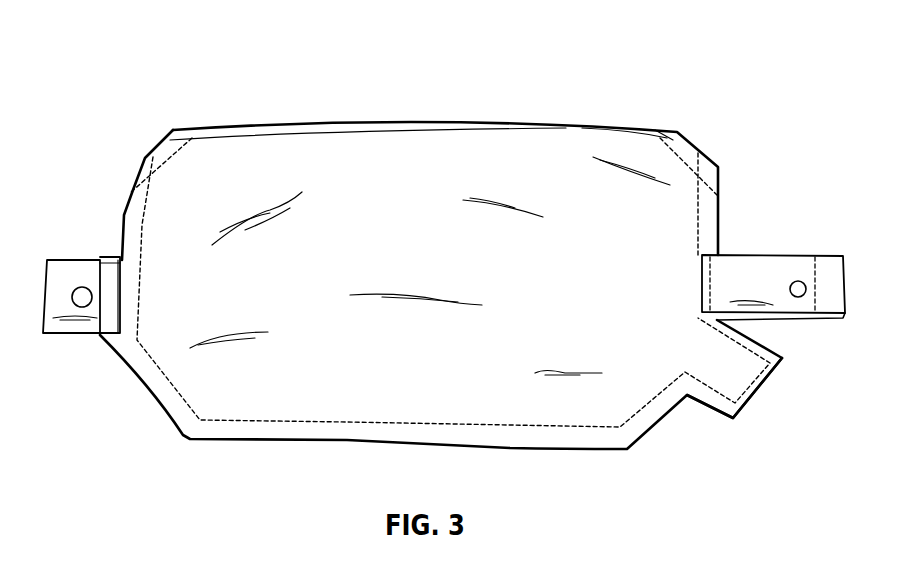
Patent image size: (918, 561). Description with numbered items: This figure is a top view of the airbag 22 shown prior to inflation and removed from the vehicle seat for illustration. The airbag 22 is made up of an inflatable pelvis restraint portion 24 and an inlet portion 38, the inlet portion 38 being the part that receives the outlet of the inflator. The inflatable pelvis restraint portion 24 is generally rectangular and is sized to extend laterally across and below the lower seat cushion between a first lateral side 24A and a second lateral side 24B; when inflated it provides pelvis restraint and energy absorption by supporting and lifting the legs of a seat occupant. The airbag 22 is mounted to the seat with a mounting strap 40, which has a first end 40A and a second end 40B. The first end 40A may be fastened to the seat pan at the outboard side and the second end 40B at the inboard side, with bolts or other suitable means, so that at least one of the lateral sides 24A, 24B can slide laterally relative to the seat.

The airbag 22 is at (217, 60).
The inflatable pelvis restraint portion 24 is at (563, 126).
The first lateral side 24A is at (163, 352).
The second lateral side 24B is at (707, 197).
The inlet portion 38 is at (718, 415).
The mounting strap 40 is at (757, 250).
The first end 40A is at (72, 260).
The second end 40B is at (808, 320).